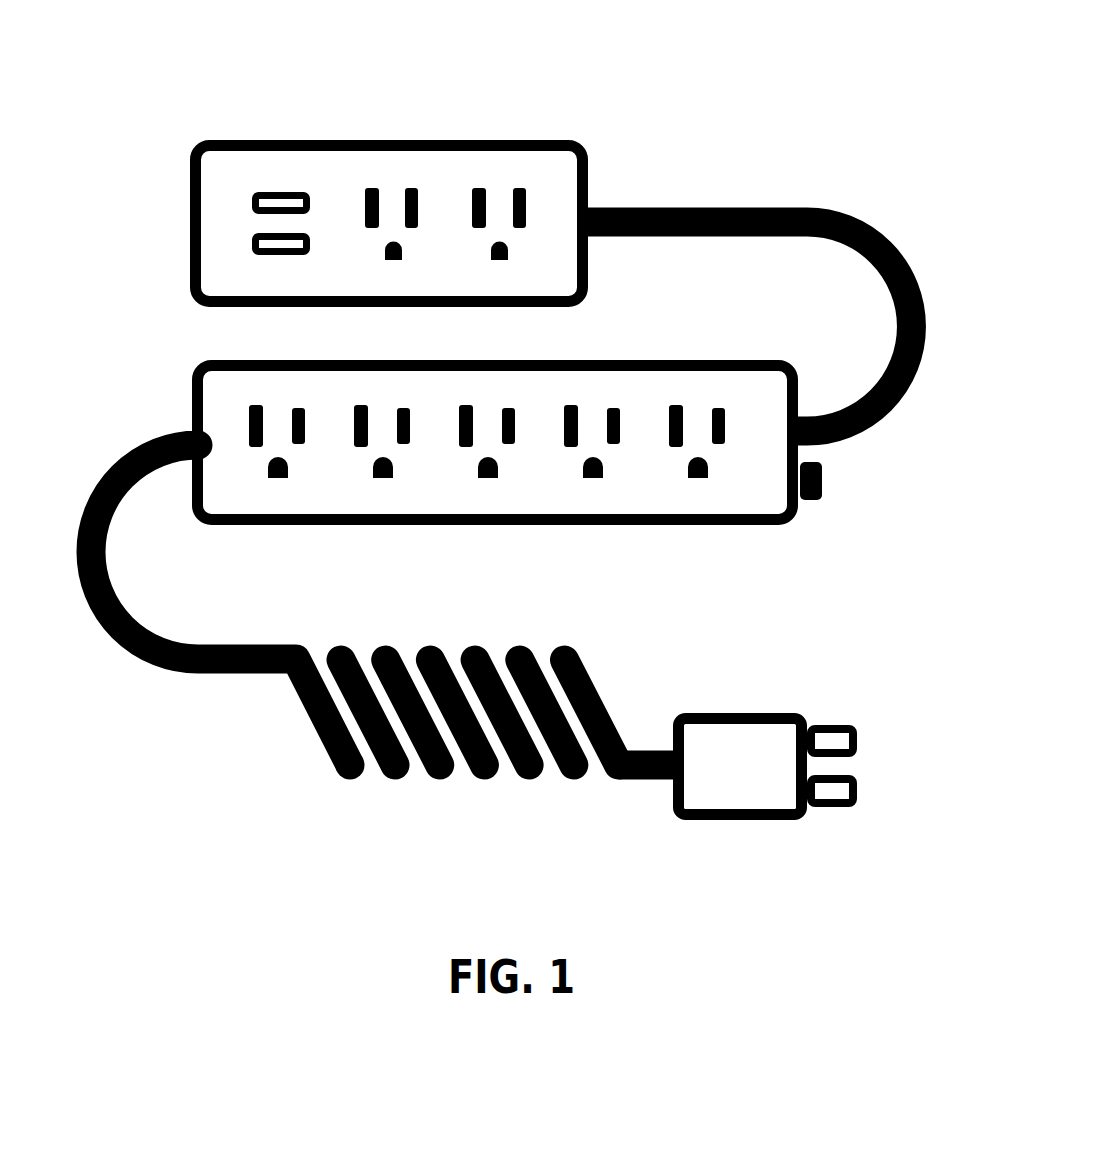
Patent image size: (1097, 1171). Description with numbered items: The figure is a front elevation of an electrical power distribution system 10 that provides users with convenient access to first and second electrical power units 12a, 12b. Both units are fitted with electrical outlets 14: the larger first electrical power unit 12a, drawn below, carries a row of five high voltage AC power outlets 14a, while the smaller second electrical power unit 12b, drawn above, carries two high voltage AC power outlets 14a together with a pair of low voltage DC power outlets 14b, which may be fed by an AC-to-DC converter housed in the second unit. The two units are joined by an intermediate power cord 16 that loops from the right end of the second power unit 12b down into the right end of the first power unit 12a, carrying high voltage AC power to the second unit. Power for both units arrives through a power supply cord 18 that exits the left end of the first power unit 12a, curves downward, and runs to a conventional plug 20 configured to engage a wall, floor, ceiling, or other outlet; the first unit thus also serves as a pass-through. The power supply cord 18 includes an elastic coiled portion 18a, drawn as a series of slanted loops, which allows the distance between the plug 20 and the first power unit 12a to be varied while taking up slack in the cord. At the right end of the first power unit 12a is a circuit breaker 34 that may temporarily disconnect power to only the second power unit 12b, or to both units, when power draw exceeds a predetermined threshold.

The electrical power distribution system 10 is at (800, 85).
The first electrical power unit 12a is at (677, 527).
The second electrical power unit 12b is at (450, 140).
The electrical outlets 14 is at (453, 334).
The high voltage AC power outlets 14a is at (447, 254).
The low voltage DC power outlets 14b is at (243, 207).
The intermediate power cord 16 is at (868, 226).
The power supply cord 18 is at (377, 654).
The elastic coiled portion 18a is at (617, 793).
The plug 20 is at (744, 712).
The circuit breaker 34 is at (822, 480).